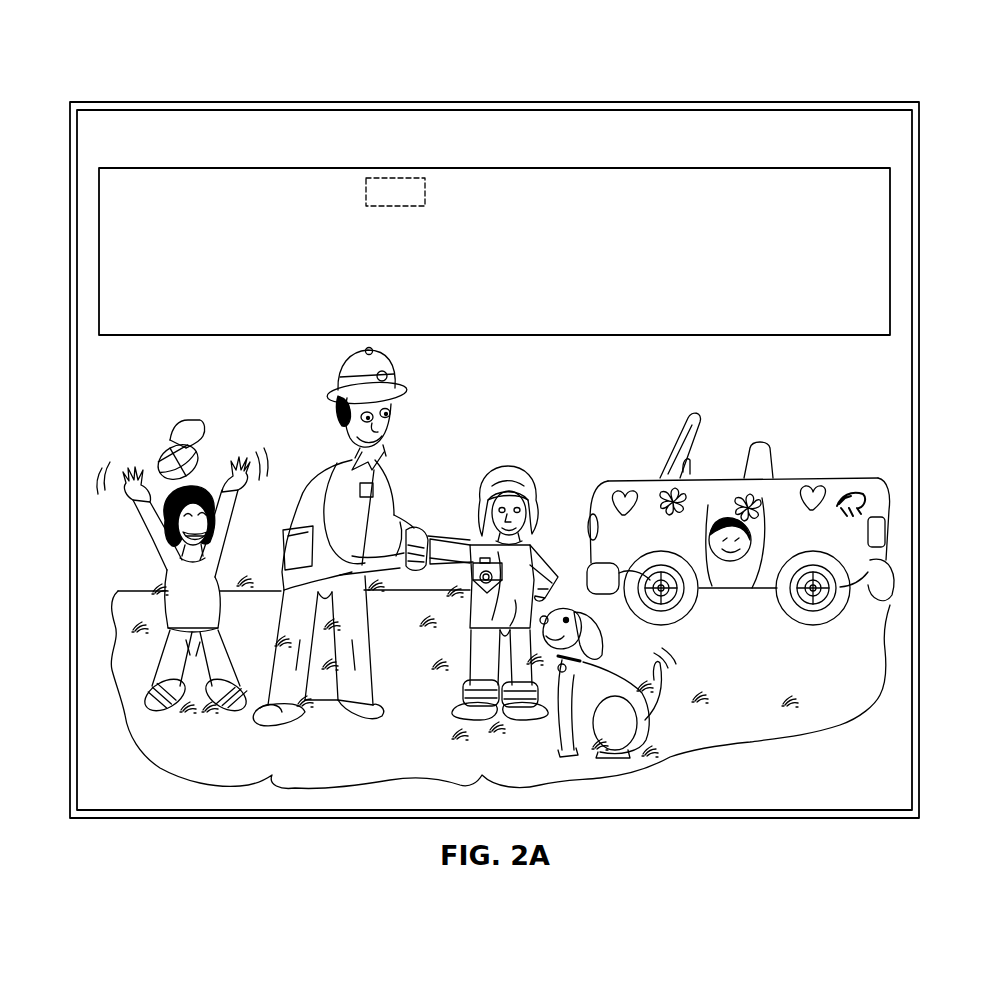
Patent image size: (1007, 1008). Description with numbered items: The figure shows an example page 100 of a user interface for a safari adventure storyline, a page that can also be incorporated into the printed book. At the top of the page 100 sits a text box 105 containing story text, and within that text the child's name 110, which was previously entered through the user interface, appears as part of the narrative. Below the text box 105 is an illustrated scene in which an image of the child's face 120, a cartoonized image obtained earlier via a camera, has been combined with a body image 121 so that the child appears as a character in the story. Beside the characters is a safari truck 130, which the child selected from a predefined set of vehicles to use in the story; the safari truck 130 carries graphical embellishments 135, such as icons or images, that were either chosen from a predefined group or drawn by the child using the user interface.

The example page 100 is at (851, 94).
The text box 105 is at (556, 168).
The child's name 110 is at (398, 170).
The image of the child's face 120 is at (510, 466).
The body image 121 is at (527, 742).
The safari truck 130 is at (785, 519).
The graphical embellishments 135 is at (818, 508).